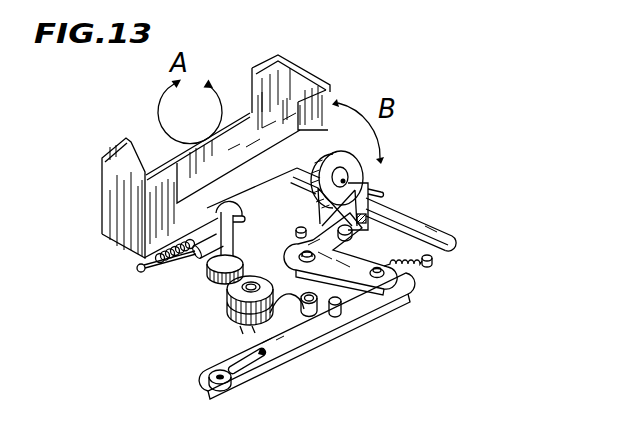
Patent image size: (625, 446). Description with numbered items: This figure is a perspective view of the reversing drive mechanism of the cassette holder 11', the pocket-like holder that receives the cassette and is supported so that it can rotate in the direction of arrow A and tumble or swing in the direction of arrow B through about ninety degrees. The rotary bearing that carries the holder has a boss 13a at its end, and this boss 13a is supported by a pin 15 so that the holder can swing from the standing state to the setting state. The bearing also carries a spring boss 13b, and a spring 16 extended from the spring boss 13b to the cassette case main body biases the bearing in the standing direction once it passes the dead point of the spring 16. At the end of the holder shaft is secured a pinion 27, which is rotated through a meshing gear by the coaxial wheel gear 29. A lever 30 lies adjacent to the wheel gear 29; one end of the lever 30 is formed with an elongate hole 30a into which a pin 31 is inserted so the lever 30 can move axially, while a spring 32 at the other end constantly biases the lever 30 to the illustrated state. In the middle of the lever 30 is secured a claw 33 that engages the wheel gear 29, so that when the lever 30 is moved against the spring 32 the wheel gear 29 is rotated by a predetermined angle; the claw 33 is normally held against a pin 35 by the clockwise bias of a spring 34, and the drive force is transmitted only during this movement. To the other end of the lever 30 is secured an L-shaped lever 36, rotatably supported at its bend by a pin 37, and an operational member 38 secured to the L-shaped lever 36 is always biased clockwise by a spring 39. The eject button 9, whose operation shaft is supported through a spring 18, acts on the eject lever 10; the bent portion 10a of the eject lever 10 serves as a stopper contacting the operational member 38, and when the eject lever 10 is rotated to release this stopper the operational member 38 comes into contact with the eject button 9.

The eject button 9 is at (306, 180).
The eject lever 10 is at (430, 233).
The bent portion 10a is at (382, 193).
The cassette holder 11' is at (236, 151).
The boss 13a is at (216, 268).
The spring boss 13b is at (221, 199).
The pin 15 is at (190, 264).
The spring 16 is at (138, 272).
The spring 18 is at (262, 280).
The pinion 27 is at (218, 285).
The wheel gear 29 is at (240, 320).
The lever 30 is at (304, 340).
The elongate hole 30a is at (250, 368).
The pin 31 is at (210, 385).
The spring 32 is at (413, 264).
The claw 33 is at (306, 317).
The spring 34 is at (334, 314).
The pin 35 is at (360, 305).
The L-shaped lever 36 is at (398, 224).
The pin 37 is at (300, 240).
The operational member 38 is at (352, 183).
The spring 39 is at (300, 228).